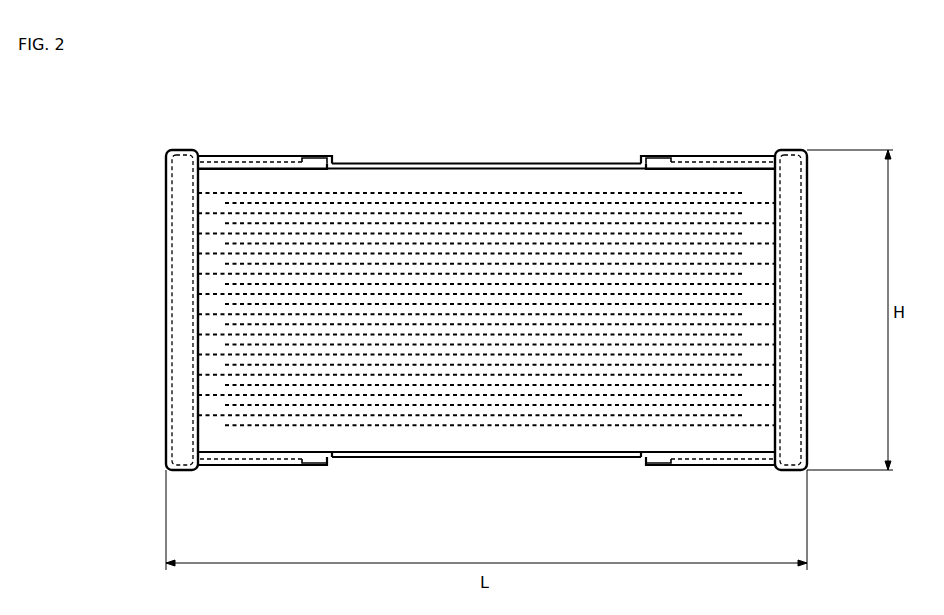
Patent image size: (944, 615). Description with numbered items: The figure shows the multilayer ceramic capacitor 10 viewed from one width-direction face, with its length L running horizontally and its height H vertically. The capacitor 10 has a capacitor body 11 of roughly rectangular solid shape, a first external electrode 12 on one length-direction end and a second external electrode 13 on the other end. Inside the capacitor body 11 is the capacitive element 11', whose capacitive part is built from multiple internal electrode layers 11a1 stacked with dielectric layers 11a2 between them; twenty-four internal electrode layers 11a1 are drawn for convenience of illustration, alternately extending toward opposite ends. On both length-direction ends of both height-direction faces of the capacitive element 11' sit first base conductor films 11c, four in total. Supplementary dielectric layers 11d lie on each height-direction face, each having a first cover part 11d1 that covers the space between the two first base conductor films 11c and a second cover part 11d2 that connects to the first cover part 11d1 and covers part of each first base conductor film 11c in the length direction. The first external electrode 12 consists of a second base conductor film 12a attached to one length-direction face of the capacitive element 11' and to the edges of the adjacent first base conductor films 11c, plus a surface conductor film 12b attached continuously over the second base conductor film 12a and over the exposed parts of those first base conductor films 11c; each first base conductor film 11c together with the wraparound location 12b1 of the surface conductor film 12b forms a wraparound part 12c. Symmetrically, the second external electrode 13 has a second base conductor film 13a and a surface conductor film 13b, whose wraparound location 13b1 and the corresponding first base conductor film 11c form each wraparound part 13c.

The multilayer ceramic capacitor 10 is at (165, 171).
The capacitor body 11 is at (486, 314).
The capacitive element 11' is at (486, 279).
The internal electrode layers 11a1 is at (398, 425).
The dielectric layers 11a2 is at (445, 425).
The first base conductor films 11c is at (263, 160).
The supplementary dielectric layers 11d is at (552, 163).
The first cover part 11d1 is at (548, 125).
The second cover part 11d2 is at (308, 157).
The first external electrode 12 is at (165, 307).
The second base conductor film 12a is at (172, 250).
The surface conductor film 12b is at (166, 366).
The wraparound location 12b1 is at (212, 154).
The wraparound parts 12c is at (272, 98).
The second external electrode 13 is at (808, 307).
The second base conductor film 13a is at (802, 250).
The surface conductor film 13b is at (808, 366).
The wraparound location 13b1 is at (752, 154).
The wraparound parts 13c is at (763, 98).